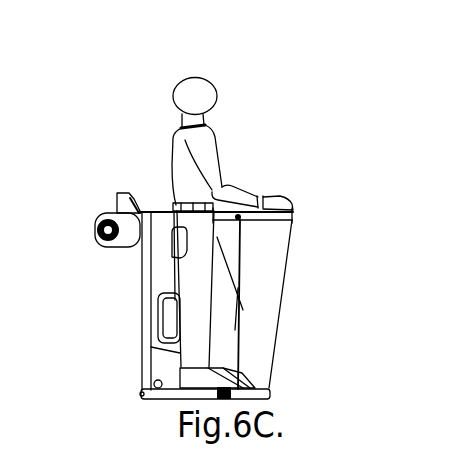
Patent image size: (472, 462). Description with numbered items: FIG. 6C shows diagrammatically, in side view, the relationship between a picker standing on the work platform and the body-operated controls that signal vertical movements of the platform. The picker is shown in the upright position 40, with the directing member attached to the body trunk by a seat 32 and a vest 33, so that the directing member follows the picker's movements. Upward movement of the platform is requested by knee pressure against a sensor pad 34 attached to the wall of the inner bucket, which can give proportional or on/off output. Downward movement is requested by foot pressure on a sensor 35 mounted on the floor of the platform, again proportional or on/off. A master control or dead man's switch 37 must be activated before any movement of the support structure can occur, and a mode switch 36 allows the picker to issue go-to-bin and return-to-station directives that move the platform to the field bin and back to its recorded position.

The upright position 40 is at (201, 77).
The vest 33 is at (172, 163).
The mode switch 36 is at (117, 201).
The seat 32 is at (116, 257).
The sensor pad 34 is at (300, 304).
The sensor 35 is at (103, 369).
The master control switch 37 is at (232, 392).